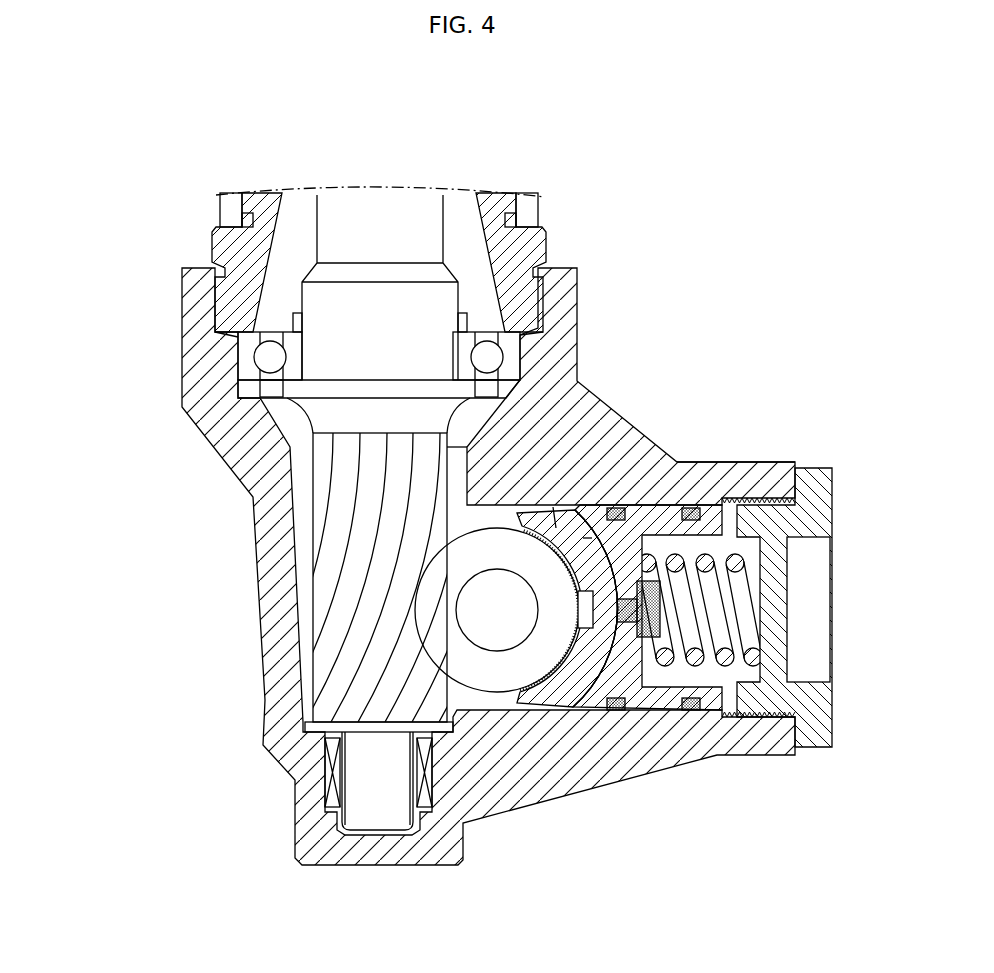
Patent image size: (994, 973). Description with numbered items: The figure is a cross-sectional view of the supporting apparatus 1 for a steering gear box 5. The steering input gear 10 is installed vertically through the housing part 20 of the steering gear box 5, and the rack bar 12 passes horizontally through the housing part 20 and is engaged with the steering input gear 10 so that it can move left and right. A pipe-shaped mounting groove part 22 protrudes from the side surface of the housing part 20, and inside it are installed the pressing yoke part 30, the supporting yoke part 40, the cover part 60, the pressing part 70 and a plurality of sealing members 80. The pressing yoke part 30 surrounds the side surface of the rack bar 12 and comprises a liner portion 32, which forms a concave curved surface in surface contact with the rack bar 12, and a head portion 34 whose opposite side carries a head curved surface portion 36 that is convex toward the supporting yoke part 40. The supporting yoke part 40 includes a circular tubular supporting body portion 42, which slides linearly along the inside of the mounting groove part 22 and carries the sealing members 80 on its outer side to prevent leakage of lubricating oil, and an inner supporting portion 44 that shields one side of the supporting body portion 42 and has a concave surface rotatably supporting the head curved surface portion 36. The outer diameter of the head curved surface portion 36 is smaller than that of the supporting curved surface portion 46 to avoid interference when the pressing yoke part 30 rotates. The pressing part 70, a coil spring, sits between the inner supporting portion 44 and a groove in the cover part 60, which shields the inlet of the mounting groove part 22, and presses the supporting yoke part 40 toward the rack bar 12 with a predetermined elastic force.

The supporting apparatus 1 is at (725, 243).
The steering gear box 5 is at (142, 283).
The steering input gear 10 is at (363, 590).
The rack bar 12 is at (492, 692).
The housing part 20 is at (228, 507).
The mounting groove part 22 is at (767, 473).
The pressing yoke part 30 is at (581, 720).
The liner portion 32 is at (558, 692).
The head portion 34 is at (566, 692).
The head curved surface portion 36 is at (640, 700).
The supporting yoke part 40 is at (740, 704).
The supporting body portion 42 is at (655, 640).
The inner supporting portion 44 is at (583, 538).
The supporting curved surface portion 46 is at (562, 543).
The cover part 60 is at (833, 503).
The pressing part 70 is at (748, 618).
The sealing member 80 is at (690, 508).